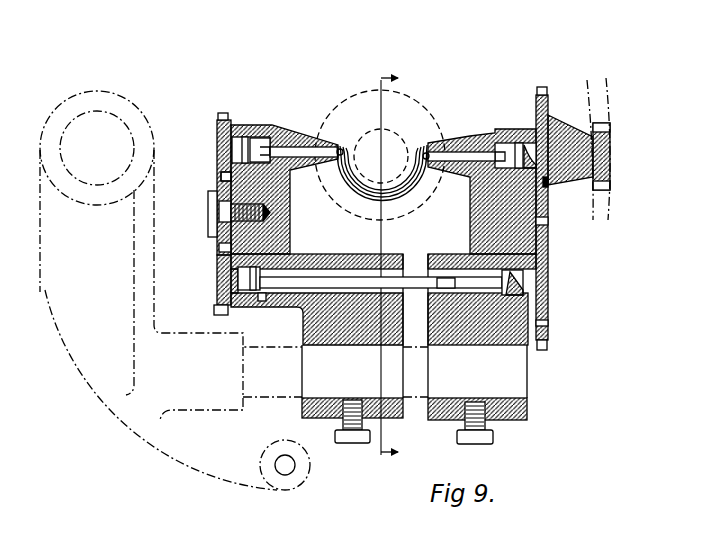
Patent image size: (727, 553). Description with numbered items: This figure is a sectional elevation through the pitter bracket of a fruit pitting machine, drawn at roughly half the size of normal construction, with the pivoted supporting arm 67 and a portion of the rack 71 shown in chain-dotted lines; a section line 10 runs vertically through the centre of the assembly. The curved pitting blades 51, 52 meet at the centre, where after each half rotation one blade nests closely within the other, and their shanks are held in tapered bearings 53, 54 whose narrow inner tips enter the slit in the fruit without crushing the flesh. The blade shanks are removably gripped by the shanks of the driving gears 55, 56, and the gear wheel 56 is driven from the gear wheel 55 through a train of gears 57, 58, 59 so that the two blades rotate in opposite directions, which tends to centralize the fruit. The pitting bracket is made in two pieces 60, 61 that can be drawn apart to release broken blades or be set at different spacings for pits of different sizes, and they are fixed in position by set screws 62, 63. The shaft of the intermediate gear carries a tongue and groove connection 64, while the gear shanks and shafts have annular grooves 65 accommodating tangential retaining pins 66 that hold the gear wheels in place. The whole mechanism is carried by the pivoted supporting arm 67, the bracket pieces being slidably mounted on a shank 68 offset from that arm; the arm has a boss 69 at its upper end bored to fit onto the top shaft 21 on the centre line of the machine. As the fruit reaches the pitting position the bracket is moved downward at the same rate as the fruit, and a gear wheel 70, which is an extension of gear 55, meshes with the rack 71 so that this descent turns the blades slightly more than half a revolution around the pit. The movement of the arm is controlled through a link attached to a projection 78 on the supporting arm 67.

The section line 10 is at (405, 266).
The top shaft 21 is at (88, 143).
The curved pitting blade 51 is at (395, 178).
The curved pitting blade 52 is at (350, 188).
The bearing 53 is at (470, 140).
The bearing 54 is at (305, 140).
The driving gear 55 is at (541, 88).
The driving gear 56 is at (226, 112).
The gear 57 is at (525, 300).
The gear 58 is at (218, 263).
The gear 59 is at (219, 197).
The bracket piece 60 is at (530, 412).
The bracket piece 61 is at (355, 256).
The set screw 62 is at (478, 437).
The set screw 63 is at (358, 433).
The tongue and groove connection 64 is at (418, 276).
The annular groove 65 is at (250, 136).
The tangential retaining pin 66 is at (230, 145).
The pivoted supporting arm 67 is at (190, 367).
The shank 68 is at (278, 375).
The boss 69 is at (106, 105).
The gear wheel 70 is at (600, 163).
The rack 71 is at (600, 100).
The projection 78 is at (280, 468).